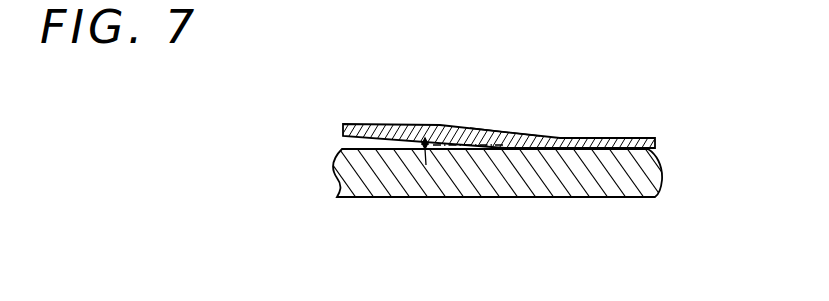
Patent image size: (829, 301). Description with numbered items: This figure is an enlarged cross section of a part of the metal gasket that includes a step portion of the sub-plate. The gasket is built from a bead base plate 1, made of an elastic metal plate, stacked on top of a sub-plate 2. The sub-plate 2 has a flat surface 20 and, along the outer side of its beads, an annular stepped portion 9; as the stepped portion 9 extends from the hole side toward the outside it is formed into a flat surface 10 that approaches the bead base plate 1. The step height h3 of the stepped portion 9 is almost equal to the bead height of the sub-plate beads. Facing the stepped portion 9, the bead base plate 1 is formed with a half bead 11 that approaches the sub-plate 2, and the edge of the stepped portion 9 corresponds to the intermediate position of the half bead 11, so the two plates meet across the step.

The bead base plate 1 is at (380, 123).
The sub-plate 2 is at (577, 201).
The stepped portion 9 is at (473, 152).
The flat surface 10 is at (513, 151).
The half bead 11 is at (503, 132).
The flat surface of sub-plate 20 is at (358, 149).
The step height h3 is at (425, 138).